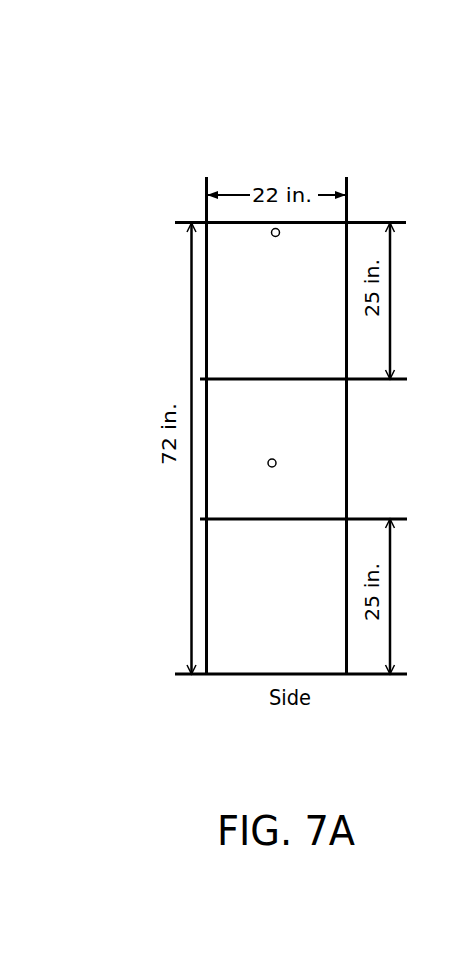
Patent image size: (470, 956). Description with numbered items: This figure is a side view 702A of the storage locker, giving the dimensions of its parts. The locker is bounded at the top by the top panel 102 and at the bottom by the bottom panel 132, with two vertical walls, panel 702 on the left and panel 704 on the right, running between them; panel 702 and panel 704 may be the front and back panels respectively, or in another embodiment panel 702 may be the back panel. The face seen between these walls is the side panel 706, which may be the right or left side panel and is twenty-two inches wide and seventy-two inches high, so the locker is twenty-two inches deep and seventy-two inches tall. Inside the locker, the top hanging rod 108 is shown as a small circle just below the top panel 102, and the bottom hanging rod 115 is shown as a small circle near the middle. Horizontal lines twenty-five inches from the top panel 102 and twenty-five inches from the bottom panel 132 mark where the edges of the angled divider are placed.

The side panel assembly 702A is at (304, 61).
The top panel 102 is at (297, 331).
The top hanging rod 108 is at (271, 233).
The bottom hanging rod 115 is at (268, 464).
The panel 702 is at (206, 353).
The panel 704 is at (347, 471).
The side panel 706 is at (225, 588).
The bottom panel 132 is at (225, 676).